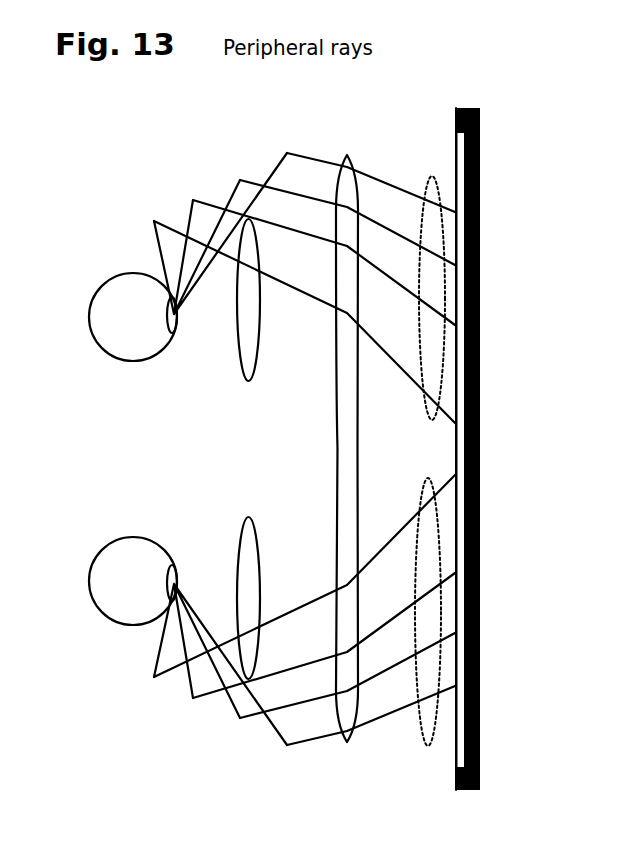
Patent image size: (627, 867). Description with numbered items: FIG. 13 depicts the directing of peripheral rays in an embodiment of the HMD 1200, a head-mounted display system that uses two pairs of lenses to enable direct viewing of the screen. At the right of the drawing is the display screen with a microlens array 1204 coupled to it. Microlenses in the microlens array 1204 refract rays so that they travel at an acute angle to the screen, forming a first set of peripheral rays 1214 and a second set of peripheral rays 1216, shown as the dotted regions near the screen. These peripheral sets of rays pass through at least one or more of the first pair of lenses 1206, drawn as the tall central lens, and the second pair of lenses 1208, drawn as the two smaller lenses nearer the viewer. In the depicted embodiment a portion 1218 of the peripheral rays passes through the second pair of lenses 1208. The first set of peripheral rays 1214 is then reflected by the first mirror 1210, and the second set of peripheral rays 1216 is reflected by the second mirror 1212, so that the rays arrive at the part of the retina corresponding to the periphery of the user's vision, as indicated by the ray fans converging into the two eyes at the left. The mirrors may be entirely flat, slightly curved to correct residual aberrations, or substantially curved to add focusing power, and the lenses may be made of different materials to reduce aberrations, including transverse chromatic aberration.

The HMD 1200 is at (519, 156).
The microlens array 1204 is at (462, 757).
The first pair of lenses 1206 is at (357, 448).
The second pair of lenses 1208 is at (236, 449).
The first mirror 1210 is at (193, 202).
The second mirror 1212 is at (182, 690).
The first set of peripheral rays 1214 is at (430, 178).
The second set of peripheral rays 1216 is at (416, 493).
The portion of the peripheral rays 1218 is at (258, 264).